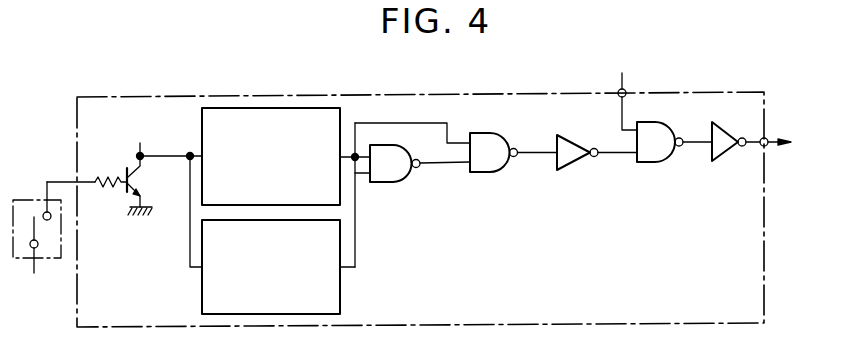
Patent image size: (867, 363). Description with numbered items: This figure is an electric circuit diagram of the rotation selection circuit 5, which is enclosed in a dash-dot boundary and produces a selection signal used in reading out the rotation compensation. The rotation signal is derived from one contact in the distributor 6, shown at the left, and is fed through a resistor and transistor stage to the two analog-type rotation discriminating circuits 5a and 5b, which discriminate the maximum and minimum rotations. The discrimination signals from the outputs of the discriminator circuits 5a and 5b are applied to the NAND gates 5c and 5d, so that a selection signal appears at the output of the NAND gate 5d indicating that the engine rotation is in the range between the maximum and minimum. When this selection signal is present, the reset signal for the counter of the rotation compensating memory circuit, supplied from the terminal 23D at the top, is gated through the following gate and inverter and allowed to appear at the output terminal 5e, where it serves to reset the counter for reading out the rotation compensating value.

The rotation selection circuit 5 is at (318, 95).
The rotation discriminating circuit 5a is at (202, 122).
The rotation discriminating circuit 5b is at (340, 283).
The NAND gate 5c is at (392, 183).
The NAND gate 5d is at (484, 173).
The output terminal 5e is at (762, 137).
The distributor 6 is at (53, 258).
The terminal 23D is at (627, 92).